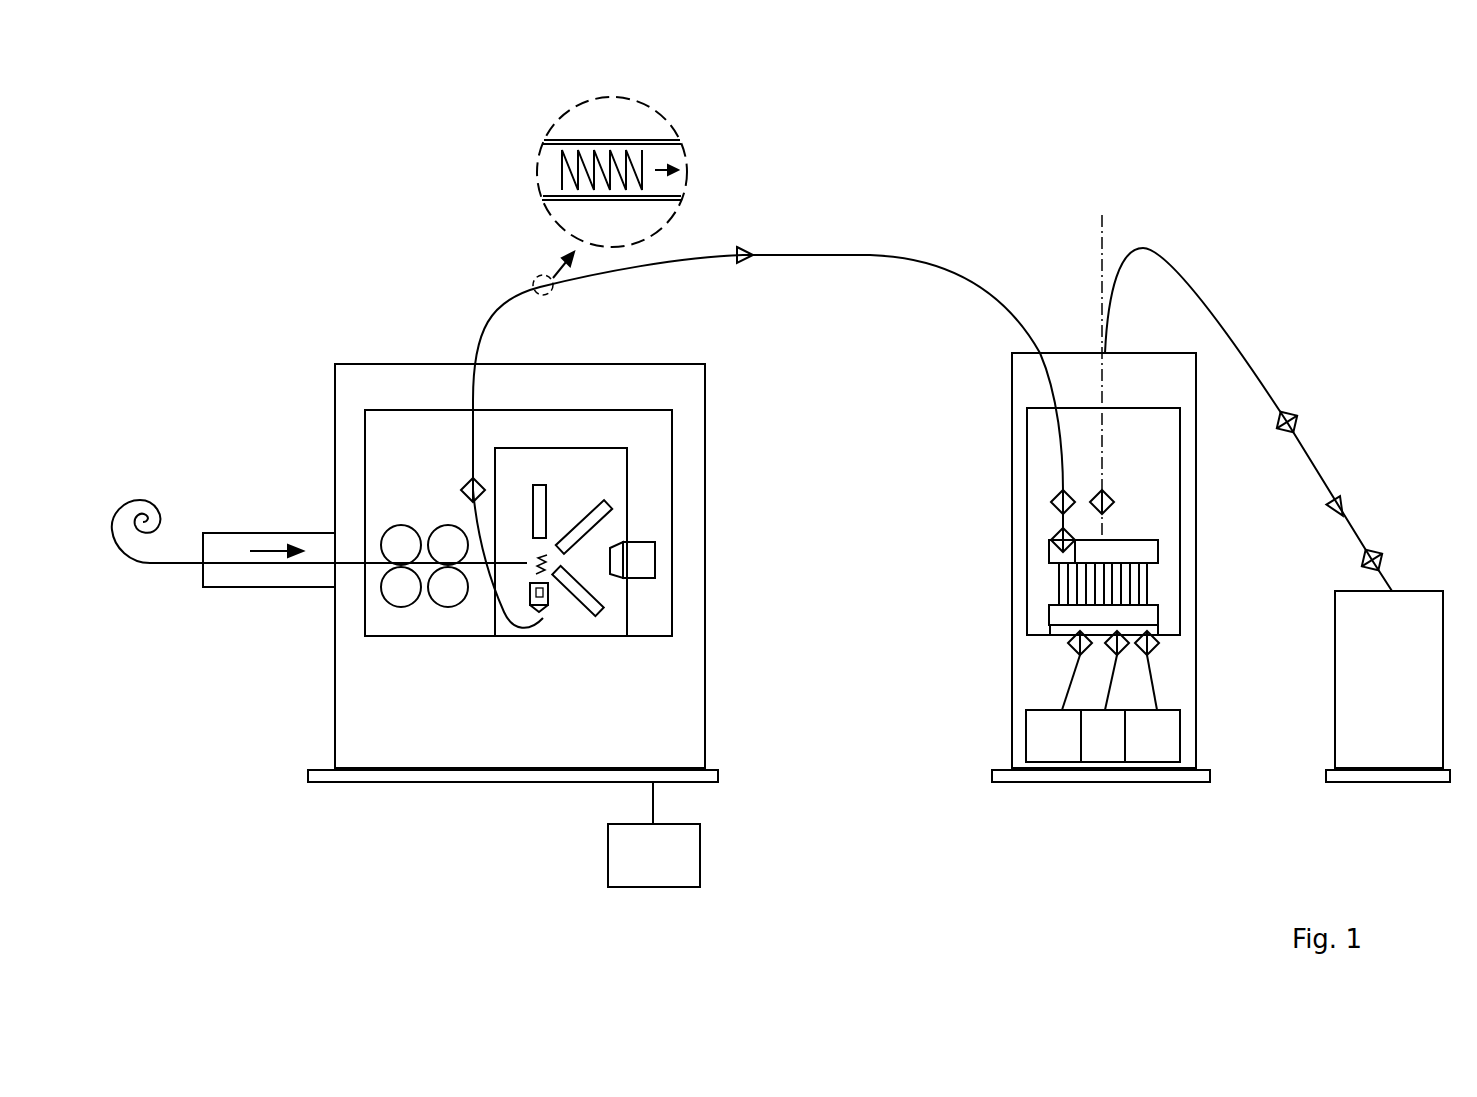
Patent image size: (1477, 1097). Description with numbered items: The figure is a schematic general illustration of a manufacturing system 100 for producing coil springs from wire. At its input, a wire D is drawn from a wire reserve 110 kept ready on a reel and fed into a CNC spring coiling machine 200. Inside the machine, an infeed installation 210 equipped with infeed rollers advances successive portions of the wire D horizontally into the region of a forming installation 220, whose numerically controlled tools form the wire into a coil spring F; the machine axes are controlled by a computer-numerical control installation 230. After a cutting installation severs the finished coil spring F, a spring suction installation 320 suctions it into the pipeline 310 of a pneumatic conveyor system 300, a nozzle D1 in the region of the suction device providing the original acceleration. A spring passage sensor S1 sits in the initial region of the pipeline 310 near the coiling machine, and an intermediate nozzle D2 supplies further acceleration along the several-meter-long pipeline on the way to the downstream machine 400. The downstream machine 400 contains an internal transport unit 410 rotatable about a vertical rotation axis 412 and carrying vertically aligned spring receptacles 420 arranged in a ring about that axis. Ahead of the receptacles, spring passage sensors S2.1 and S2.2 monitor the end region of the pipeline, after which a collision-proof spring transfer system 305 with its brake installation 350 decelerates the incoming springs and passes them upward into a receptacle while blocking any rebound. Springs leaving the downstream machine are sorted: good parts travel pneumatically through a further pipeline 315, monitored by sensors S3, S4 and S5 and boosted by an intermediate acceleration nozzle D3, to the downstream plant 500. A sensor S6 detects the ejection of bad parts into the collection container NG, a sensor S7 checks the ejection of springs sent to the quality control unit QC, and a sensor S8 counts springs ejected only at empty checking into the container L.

The manufacturing system 100 is at (318, 190).
The wire reserve 110 is at (143, 488).
The wire D is at (242, 565).
The CNC spring coiling machine 200 is at (482, 132).
The infeed installation 210 is at (420, 617).
The forming installation 220 is at (590, 495).
The computer-numerical control installation 230 is at (654, 834).
The coil spring F is at (620, 150).
The spring suction installation 320 is at (556, 625).
The nozzle D1 is at (550, 605).
The spring passage sensor S1 is at (462, 488).
The pipeline 310 is at (556, 205).
The intermediate nozzle D2 is at (745, 263).
The pneumatic conveyor system 300 is at (762, 165).
The downstream machine 400 is at (1095, 164).
The transport unit 410 is at (1040, 590).
The rotation axis 412 is at (1098, 273).
The spring passage sensor S2.1 is at (1052, 500).
The spring passage sensor S2.2 is at (1052, 538).
The sensor S3 is at (1115, 500).
The spring transfer system 305 is at (1028, 548).
The brake installation 350 is at (1056, 553).
The spring receptacles 420 is at (1148, 575).
The sensor S6 is at (1160, 648).
The sensor S7 is at (1128, 655).
The sensor S8 is at (1068, 645).
The container L is at (1055, 750).
The quality control output QC is at (1105, 750).
The not good output NG is at (1160, 750).
The further pipeline 315 is at (1235, 340).
The sensor S4 is at (1296, 415).
The intermediate acceleration nozzle D3 is at (1340, 503).
The sensor S5 is at (1380, 552).
The downstream plant 500 is at (1357, 165).